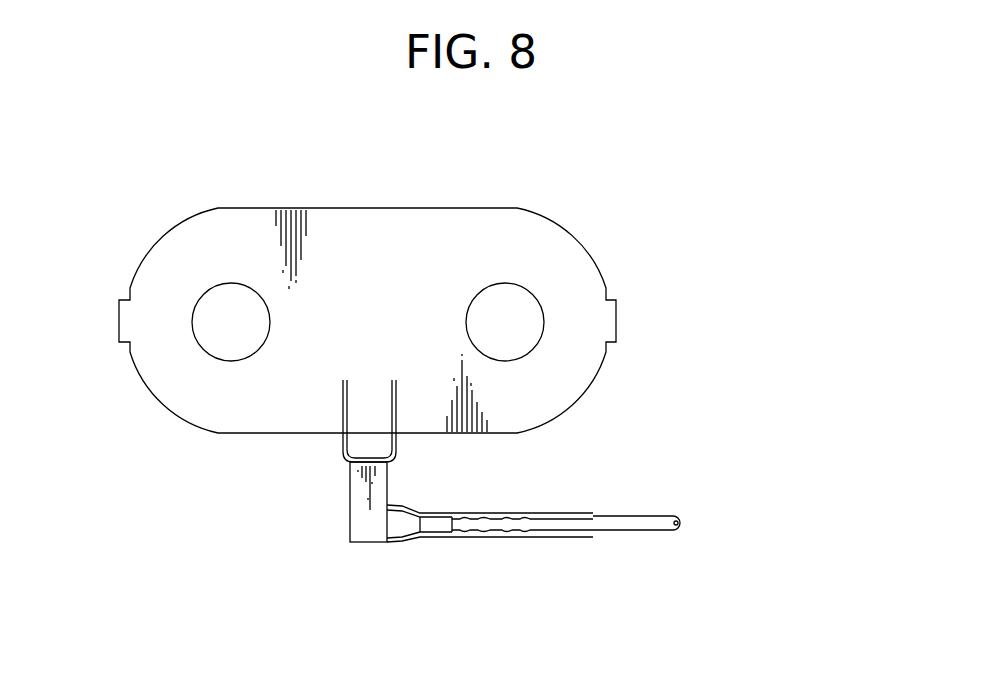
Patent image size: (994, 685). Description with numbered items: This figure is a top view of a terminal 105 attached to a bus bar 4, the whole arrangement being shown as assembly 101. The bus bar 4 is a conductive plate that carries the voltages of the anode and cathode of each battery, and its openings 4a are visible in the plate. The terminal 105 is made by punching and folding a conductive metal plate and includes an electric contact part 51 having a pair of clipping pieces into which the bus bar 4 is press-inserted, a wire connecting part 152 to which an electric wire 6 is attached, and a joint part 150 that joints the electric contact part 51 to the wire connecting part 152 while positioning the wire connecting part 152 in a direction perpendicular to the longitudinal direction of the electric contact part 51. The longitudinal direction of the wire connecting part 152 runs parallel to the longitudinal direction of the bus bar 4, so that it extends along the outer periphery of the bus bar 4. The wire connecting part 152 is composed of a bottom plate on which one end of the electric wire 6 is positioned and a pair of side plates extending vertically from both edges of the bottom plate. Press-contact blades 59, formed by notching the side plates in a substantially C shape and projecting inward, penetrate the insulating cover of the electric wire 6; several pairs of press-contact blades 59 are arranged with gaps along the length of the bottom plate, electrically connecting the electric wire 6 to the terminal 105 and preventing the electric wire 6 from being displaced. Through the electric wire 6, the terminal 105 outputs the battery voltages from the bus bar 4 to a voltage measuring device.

The terminal fitting 101 is at (575, 155).
The bus bar 4 is at (378, 232).
The holes 4a is at (225, 284).
The electric contact part 51 is at (340, 407).
The terminal 105 is at (613, 453).
The joint part 150 is at (363, 507).
The wire connecting part 152 is at (453, 550).
The press-contact blades 59 is at (480, 513).
The electric wire 6 is at (647, 523).